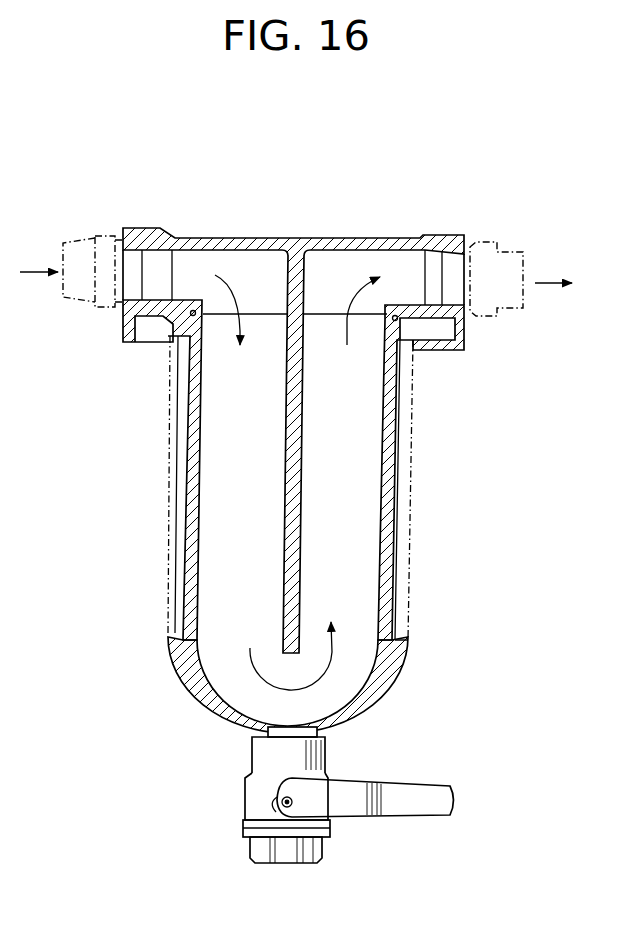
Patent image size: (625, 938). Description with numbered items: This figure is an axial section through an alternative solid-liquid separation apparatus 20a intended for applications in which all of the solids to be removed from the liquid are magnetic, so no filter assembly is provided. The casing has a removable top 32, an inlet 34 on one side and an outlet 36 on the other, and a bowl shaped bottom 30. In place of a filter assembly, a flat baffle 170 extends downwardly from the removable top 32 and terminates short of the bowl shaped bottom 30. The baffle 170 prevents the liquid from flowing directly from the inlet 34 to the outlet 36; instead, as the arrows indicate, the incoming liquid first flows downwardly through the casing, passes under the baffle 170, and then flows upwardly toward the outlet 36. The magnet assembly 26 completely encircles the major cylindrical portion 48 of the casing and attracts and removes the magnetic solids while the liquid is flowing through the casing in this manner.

The solid-liquid separation apparatus 20a is at (83, 202).
The removable top 32 is at (352, 243).
The inlet 34 is at (162, 253).
The outlet 36 is at (433, 260).
The flat baffle 170 is at (299, 405).
The magnet assembly 26 is at (165, 510).
The major cylindrical portion 48 is at (392, 408).
The bowl shaped bottom 30 is at (240, 727).